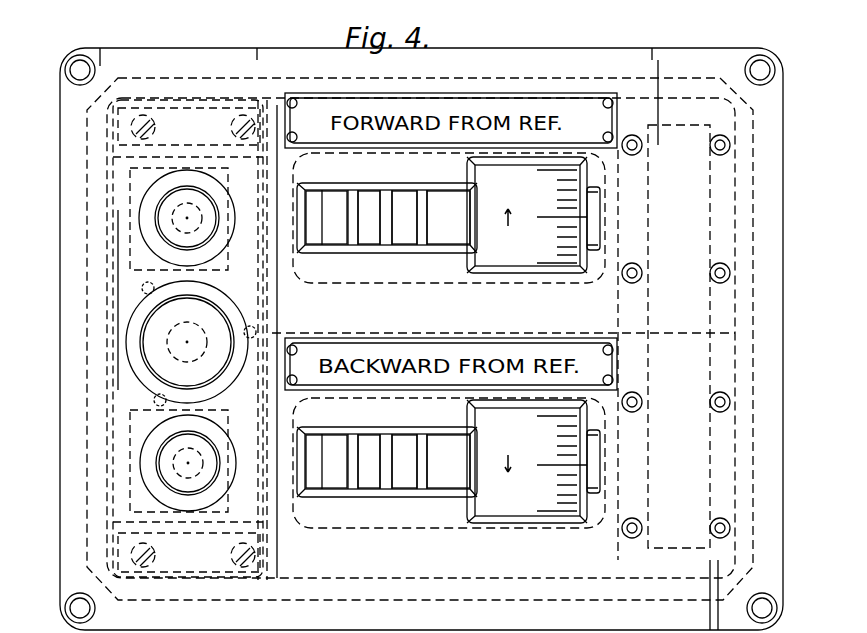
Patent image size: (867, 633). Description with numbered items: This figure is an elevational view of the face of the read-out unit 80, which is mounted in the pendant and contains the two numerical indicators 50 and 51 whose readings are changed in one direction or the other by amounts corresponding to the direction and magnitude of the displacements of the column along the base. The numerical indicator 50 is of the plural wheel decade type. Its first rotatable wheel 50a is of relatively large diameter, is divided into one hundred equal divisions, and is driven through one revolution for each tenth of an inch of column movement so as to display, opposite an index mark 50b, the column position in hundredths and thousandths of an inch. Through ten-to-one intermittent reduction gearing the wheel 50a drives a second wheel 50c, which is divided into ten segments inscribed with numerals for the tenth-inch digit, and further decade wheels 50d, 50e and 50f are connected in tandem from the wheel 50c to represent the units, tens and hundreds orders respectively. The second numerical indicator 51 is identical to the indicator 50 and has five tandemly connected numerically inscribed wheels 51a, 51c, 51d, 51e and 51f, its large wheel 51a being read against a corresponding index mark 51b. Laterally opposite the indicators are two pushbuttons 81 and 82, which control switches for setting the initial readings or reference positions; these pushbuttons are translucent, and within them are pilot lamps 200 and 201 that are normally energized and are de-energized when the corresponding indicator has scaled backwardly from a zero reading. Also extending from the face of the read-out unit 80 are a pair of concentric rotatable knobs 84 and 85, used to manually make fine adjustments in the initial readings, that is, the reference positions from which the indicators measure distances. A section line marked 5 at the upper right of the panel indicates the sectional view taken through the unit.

The section line for FIG. 5 is at (714, 30).
The read-out unit 80 is at (176, 50).
The pushbutton 81 is at (143, 218).
The pushbutton 82 is at (148, 460).
The rotatable knob 84 is at (160, 352).
The rotatable knob 85 is at (138, 328).
The pilot lamp 200 is at (197, 205).
The pilot lamp 201 is at (198, 450).
The numerical indicator 50 is at (368, 268).
The first rotatable wheel 50a is at (540, 262).
The index mark 50b is at (600, 233).
The second wheel 50c is at (448, 197).
The decade wheel 50d is at (403, 197).
The decade wheel 50e is at (368, 197).
The decade wheel 50f is at (330, 197).
The second numerical indicator 51 is at (383, 516).
The wheel 51a is at (507, 510).
The backward counter thumbwheel 51b is at (600, 478).
The wheel 51c is at (448, 441).
The wheel 51d is at (403, 441).
The wheel 51e is at (368, 441).
The wheel 51f is at (330, 441).